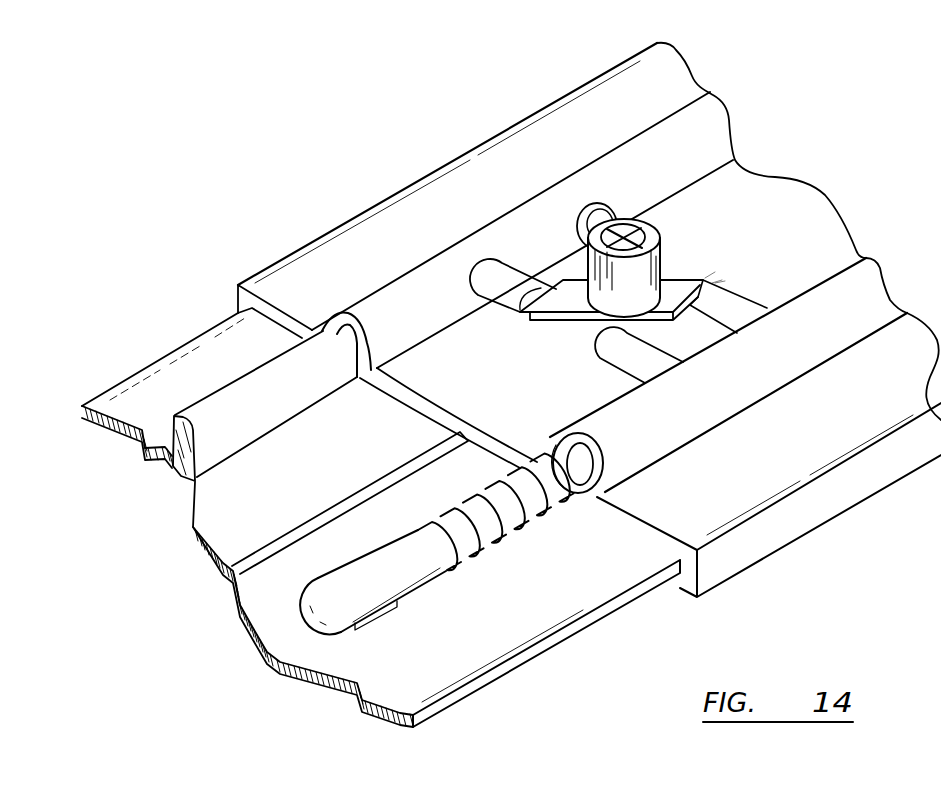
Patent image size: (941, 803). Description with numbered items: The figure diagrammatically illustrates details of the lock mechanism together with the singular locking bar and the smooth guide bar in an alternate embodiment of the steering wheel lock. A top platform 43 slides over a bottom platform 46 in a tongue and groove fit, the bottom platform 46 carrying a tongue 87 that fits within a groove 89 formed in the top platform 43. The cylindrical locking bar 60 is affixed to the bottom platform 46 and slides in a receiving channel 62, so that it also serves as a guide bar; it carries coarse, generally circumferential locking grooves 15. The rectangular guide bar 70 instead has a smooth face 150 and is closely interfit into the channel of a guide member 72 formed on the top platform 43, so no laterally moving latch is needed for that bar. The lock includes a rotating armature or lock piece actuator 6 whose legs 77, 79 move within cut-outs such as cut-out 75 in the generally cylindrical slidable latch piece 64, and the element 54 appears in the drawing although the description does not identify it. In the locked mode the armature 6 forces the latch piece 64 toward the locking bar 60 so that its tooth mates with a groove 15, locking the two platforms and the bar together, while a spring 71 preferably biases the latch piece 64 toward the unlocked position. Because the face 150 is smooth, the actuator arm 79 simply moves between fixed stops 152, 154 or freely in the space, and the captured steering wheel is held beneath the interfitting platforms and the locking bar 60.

The rotating armature or lock piece actuator 6 is at (720, 275).
The coarse locking groove 15 is at (498, 540).
The top platform 43 is at (807, 543).
The bottom platform 46 is at (547, 653).
The cylindrical post 54 is at (655, 222).
The cylindrical locking bar 60 is at (413, 595).
The receiving channel 62 is at (842, 265).
The slidable latch piece 64 is at (720, 317).
The smooth face guide bar 70 is at (225, 385).
The spring 71 is at (618, 212).
The guide member 72 is at (417, 260).
The cut-out 75 is at (740, 255).
The armature leg 77 is at (720, 279).
The armature leg (arm) 79 is at (553, 316).
The tongue 87 is at (637, 602).
The groove 89 is at (704, 562).
The smooth face 150 is at (217, 437).
The fixed stop 152 is at (502, 303).
The fixed stop 154 is at (628, 377).